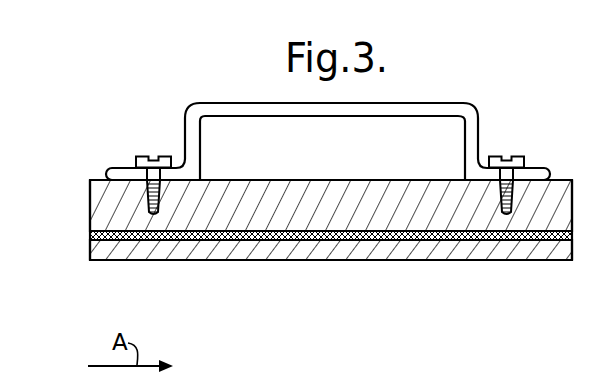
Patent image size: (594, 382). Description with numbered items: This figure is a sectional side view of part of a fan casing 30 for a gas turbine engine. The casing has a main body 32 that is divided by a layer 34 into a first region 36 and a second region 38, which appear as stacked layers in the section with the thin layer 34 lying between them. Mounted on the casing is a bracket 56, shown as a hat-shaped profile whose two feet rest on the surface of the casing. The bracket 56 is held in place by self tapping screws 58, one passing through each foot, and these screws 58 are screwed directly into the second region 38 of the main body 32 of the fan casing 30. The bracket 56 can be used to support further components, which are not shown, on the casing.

The fan casing 30 is at (312, 190).
The main body 32 is at (312, 242).
The layer 34 is at (395, 242).
The first region 36 is at (299, 247).
The second region 38 is at (100, 195).
The bracket 56 is at (217, 104).
The self tapping screws 58 is at (145, 157).